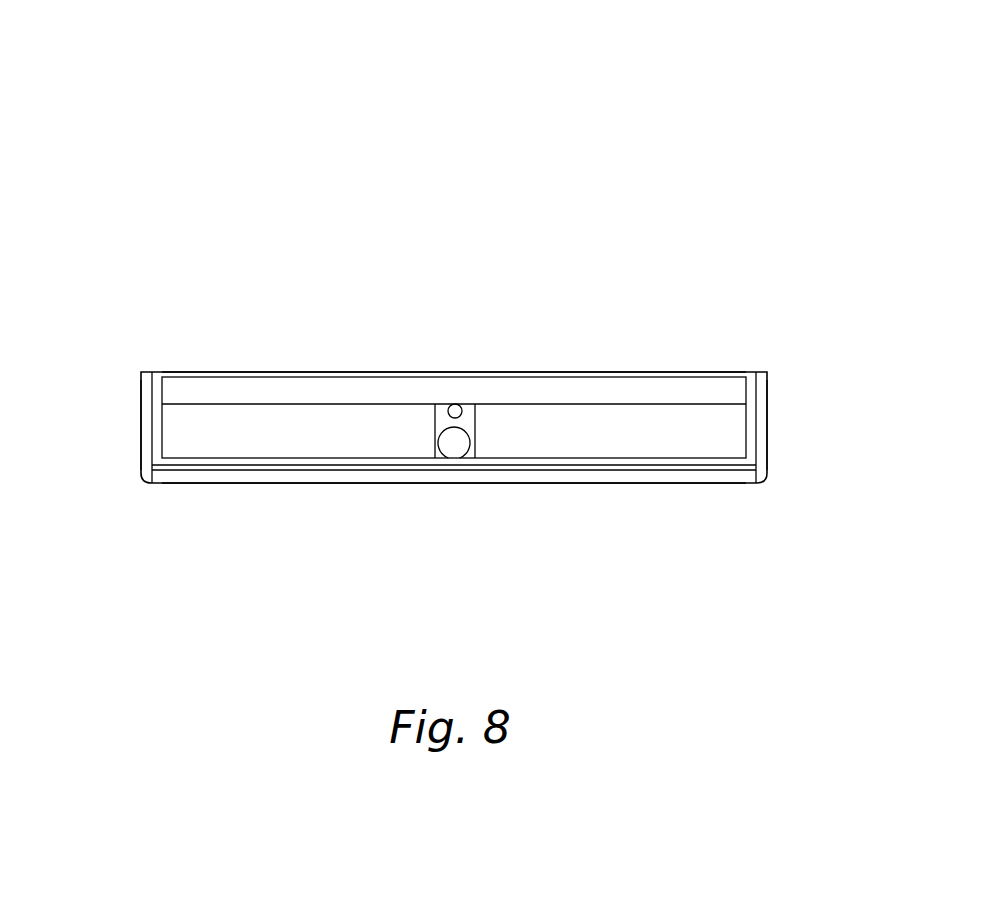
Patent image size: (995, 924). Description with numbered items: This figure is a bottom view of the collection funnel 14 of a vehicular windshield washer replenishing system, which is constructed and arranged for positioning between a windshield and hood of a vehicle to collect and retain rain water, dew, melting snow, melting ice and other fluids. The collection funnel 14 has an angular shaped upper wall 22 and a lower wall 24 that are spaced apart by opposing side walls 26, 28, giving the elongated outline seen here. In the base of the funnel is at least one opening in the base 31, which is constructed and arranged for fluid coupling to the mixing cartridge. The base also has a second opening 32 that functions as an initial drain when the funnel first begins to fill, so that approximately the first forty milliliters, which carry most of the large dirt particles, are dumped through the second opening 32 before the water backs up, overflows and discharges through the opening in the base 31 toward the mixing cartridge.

The collection funnel 14 is at (380, 163).
The upper wall 22 is at (645, 483).
The lower wall 24 is at (635, 372).
The side wall 26 is at (141, 428).
The side wall 28 is at (767, 426).
The opening in the base 31 is at (452, 447).
The second opening 32 is at (458, 405).